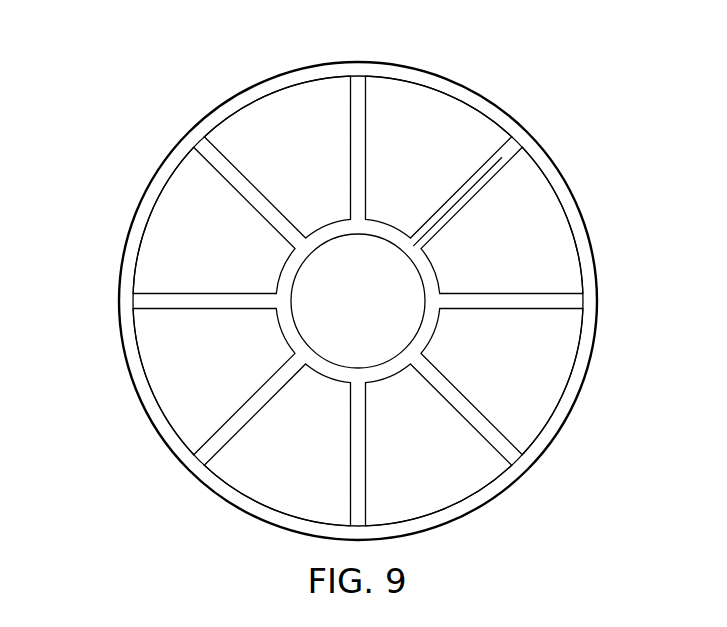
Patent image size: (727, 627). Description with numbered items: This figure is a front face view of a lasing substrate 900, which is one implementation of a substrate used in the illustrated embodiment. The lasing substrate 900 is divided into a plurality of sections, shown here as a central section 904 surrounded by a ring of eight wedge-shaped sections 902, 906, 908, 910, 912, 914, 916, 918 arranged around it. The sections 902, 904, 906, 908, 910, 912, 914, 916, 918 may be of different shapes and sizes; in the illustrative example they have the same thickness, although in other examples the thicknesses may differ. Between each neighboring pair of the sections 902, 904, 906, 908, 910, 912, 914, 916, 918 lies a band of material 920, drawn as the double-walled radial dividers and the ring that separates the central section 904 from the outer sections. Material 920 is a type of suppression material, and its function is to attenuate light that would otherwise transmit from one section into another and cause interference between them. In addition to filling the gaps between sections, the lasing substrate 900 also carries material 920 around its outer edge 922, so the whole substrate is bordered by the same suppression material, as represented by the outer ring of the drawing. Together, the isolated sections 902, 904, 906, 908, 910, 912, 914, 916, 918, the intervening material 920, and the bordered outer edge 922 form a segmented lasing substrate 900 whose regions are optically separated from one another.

The lasing substrate 900 is at (116, 173).
The section 902 is at (275, 160).
The section 904 is at (338, 313).
The section 906 is at (401, 160).
The section 908 is at (484, 252).
The section 910 is at (484, 378).
The section 912 is at (401, 470).
The section 914 is at (275, 470).
The section 916 is at (192, 376).
The section 918 is at (192, 254).
The material 920 is at (508, 148).
The outer edge 922 is at (567, 420).